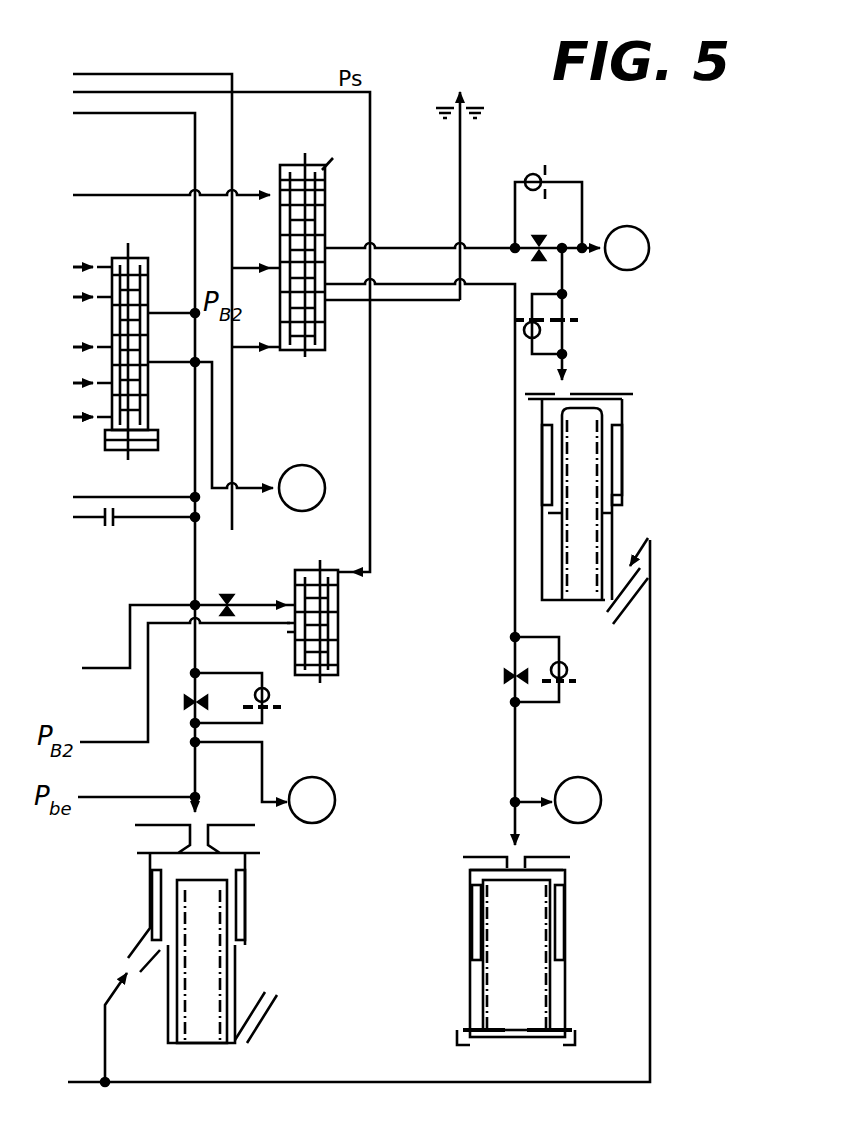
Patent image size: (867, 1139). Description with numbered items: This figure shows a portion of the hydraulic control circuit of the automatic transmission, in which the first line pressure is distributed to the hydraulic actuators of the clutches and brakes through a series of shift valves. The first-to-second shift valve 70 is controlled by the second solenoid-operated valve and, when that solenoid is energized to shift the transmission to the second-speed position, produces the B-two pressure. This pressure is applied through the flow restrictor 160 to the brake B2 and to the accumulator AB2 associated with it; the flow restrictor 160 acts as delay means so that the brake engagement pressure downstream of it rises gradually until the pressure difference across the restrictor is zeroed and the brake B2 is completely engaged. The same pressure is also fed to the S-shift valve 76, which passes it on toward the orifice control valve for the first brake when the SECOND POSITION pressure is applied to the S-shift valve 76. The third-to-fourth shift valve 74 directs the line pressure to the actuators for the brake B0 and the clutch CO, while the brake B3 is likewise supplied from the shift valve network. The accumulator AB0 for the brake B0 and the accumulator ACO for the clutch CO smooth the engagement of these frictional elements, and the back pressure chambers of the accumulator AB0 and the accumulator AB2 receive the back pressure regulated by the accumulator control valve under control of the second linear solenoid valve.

The 1-2 shift valve 70 is at (165, 268).
The 3-4 shift valve 74 is at (300, 368).
The S-shift valve 76 is at (350, 656).
The flow restrictor 160 is at (183, 702).
The brake B0 is at (650, 248).
The brake B2 is at (335, 800).
The brake B3 is at (325, 472).
The clutch C0 CO is at (578, 790).
The accumulator for brake B0 AB0 is at (630, 445).
The accumulator for brake B2 AB2 is at (250, 967).
The accumulator for clutch C0 ACO is at (572, 977).